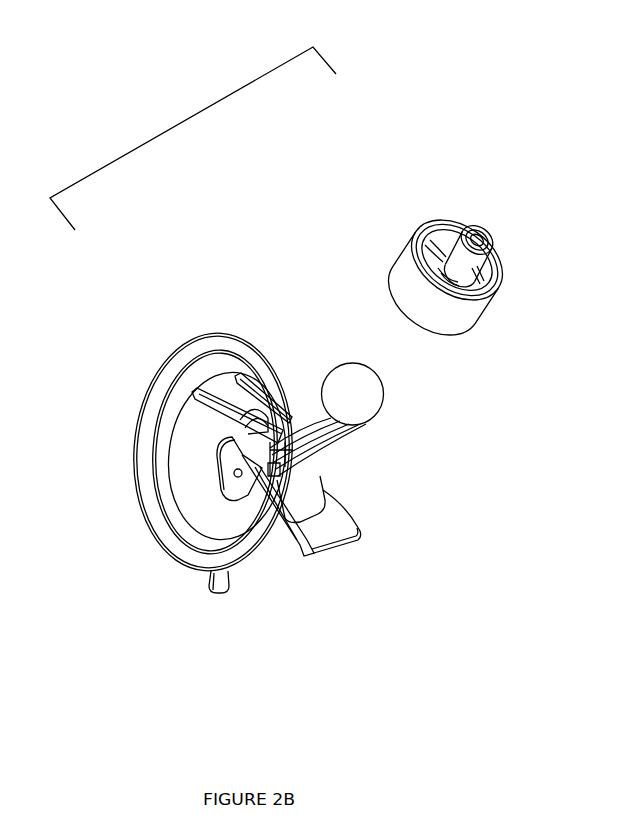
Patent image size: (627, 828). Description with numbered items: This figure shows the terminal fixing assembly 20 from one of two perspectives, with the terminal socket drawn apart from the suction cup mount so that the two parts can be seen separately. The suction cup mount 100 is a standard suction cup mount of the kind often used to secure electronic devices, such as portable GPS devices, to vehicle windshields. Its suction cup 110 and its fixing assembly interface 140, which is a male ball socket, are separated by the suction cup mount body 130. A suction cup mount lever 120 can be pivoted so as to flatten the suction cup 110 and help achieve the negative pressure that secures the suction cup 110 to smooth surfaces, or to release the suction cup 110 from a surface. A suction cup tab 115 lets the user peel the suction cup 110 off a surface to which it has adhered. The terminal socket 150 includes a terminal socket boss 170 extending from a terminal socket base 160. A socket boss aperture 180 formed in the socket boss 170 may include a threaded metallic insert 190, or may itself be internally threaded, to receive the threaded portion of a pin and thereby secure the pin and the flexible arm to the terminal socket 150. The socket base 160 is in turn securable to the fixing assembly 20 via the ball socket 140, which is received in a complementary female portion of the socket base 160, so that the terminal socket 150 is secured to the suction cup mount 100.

The fixing assembly 20 is at (181, 121).
The suction cup mount 100 is at (199, 291).
The suction cup 110 is at (137, 510).
The suction cup tab 115 is at (218, 595).
The suction cup mount lever 120 is at (330, 558).
The suction cup mount body 130 is at (345, 451).
The fixing assembly interface 140 is at (339, 367).
The terminal socket 150 is at (398, 198).
The terminal socket base 160 is at (482, 313).
The terminal socket boss 170 is at (500, 263).
The socket boss aperture 180 is at (488, 237).
The threaded metallic insert 190 is at (476, 234).